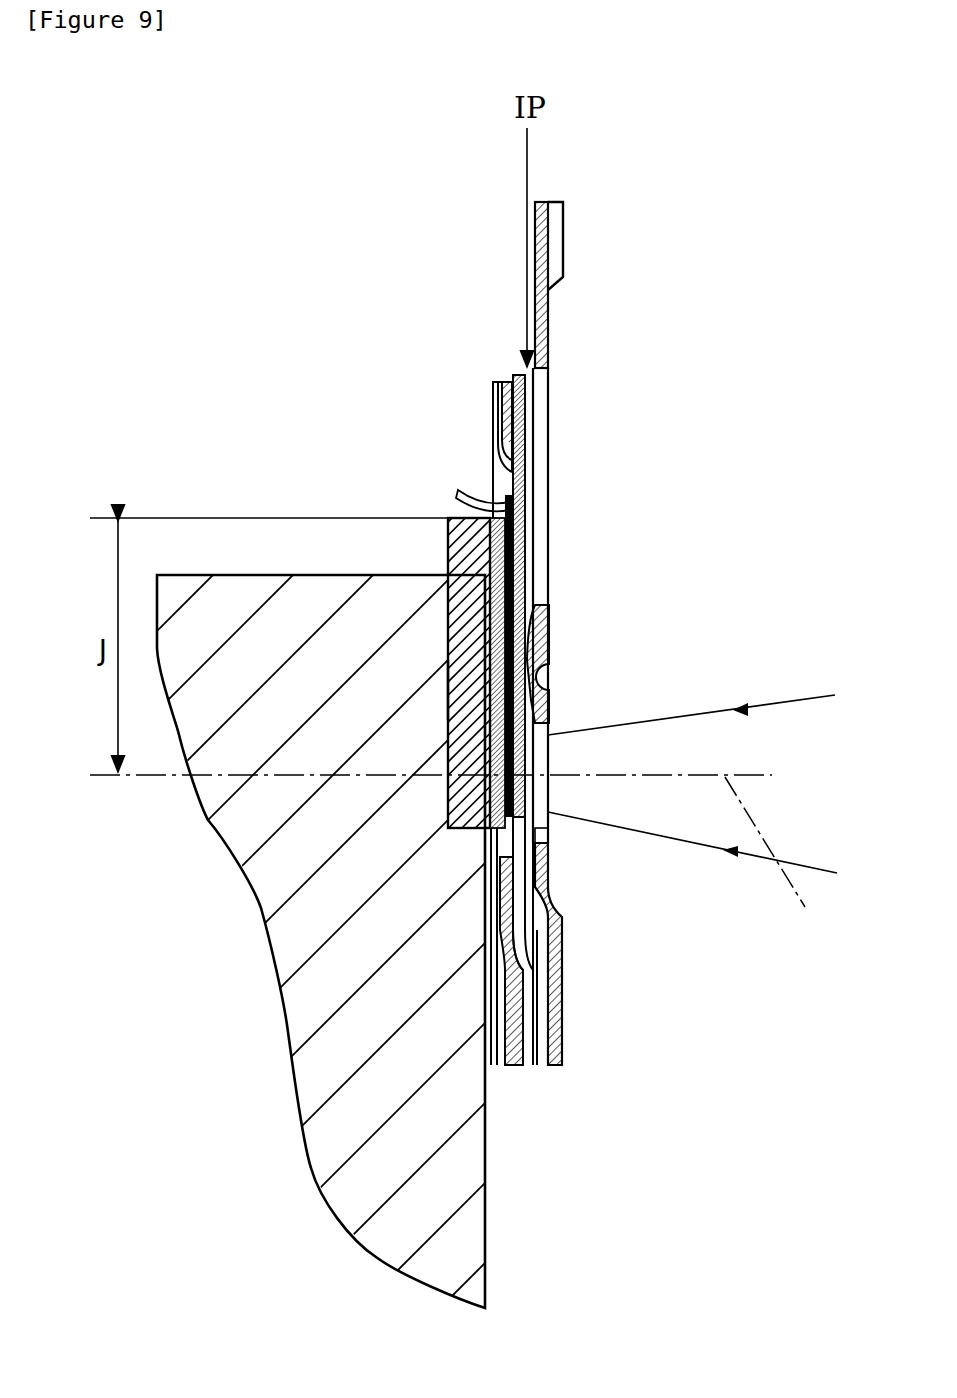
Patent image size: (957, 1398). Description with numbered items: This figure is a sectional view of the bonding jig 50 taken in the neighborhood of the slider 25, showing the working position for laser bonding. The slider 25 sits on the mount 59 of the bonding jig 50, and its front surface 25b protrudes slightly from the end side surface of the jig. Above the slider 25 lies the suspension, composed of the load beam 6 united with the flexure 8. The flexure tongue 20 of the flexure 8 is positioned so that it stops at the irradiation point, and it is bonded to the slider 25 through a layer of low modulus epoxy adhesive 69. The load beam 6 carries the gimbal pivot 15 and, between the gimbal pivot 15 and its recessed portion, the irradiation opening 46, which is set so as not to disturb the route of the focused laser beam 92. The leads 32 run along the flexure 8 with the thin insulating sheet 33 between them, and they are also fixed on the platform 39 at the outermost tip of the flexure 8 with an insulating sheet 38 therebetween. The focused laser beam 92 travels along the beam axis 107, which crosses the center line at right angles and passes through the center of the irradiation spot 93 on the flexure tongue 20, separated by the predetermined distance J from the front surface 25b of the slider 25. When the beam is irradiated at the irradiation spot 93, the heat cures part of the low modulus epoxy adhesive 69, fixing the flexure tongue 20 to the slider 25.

The load beam 6 is at (562, 977).
The flexure 8 is at (532, 1047).
The gimbal pivot 15 is at (547, 610).
The flexure tongue 20 is at (548, 702).
The slider 25 is at (450, 523).
The front surface 25b is at (453, 517).
The leads 32 is at (491, 418).
The insulating sheet 33 is at (505, 994).
The insulating sheet 38 is at (515, 383).
The platform 39 is at (552, 382).
The irradiation opening 46 is at (548, 827).
The bonding jig 50 is at (232, 610).
The mount 59 is at (445, 690).
The low modulus epoxy adhesive 69 is at (511, 540).
The focused laser beam 92 is at (747, 722).
The irradiation spot 93 is at (548, 790).
The beam axis 107 is at (782, 857).